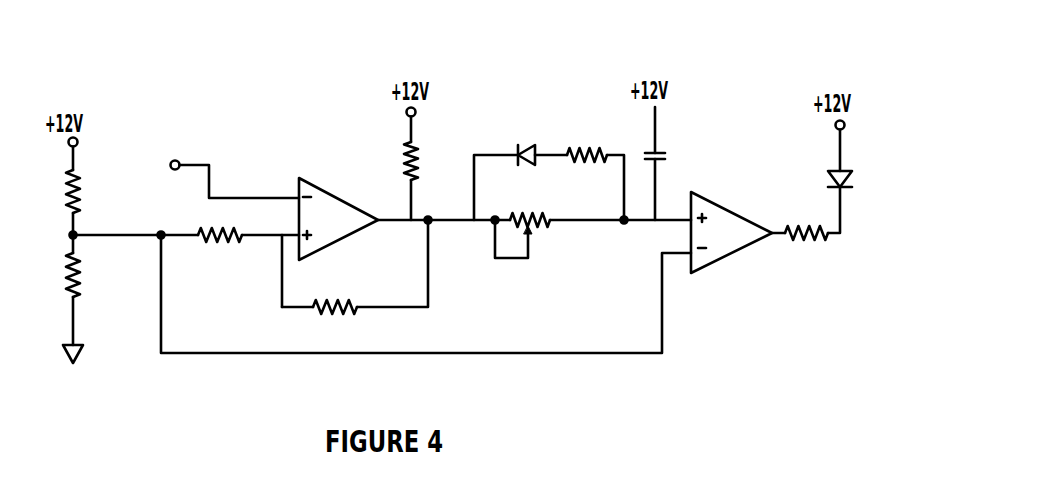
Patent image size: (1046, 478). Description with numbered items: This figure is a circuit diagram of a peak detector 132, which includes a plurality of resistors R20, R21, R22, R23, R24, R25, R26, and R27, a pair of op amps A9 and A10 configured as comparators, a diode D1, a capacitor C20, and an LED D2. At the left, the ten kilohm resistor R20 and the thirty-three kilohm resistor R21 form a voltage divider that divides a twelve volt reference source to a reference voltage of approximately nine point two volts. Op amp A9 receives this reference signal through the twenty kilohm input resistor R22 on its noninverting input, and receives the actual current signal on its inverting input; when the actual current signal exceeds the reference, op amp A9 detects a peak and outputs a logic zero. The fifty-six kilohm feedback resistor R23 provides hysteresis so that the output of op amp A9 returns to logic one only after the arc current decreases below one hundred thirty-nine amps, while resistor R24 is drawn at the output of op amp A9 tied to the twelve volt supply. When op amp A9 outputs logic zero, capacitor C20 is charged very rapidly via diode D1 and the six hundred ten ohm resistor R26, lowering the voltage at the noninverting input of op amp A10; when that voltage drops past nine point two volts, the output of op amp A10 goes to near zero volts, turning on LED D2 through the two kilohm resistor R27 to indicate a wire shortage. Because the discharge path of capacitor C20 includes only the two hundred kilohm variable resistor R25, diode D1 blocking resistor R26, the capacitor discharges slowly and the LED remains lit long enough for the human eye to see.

The resistor R20 is at (83, 195).
The resistor R21 is at (83, 281).
The input resistor R22 is at (211, 230).
The feedback resistor R23 is at (330, 299).
The resistor R24 is at (420, 162).
The variable resistor R25 is at (538, 213).
The resistor R26 is at (590, 148).
The resistor R27 is at (811, 243).
The op amp A9 is at (330, 190).
The op amp A10 is at (723, 202).
The diode D1 is at (517, 152).
The LED D2 is at (867, 200).
The capacitor C20 is at (664, 158).
The peak detector 132 is at (548, 100).